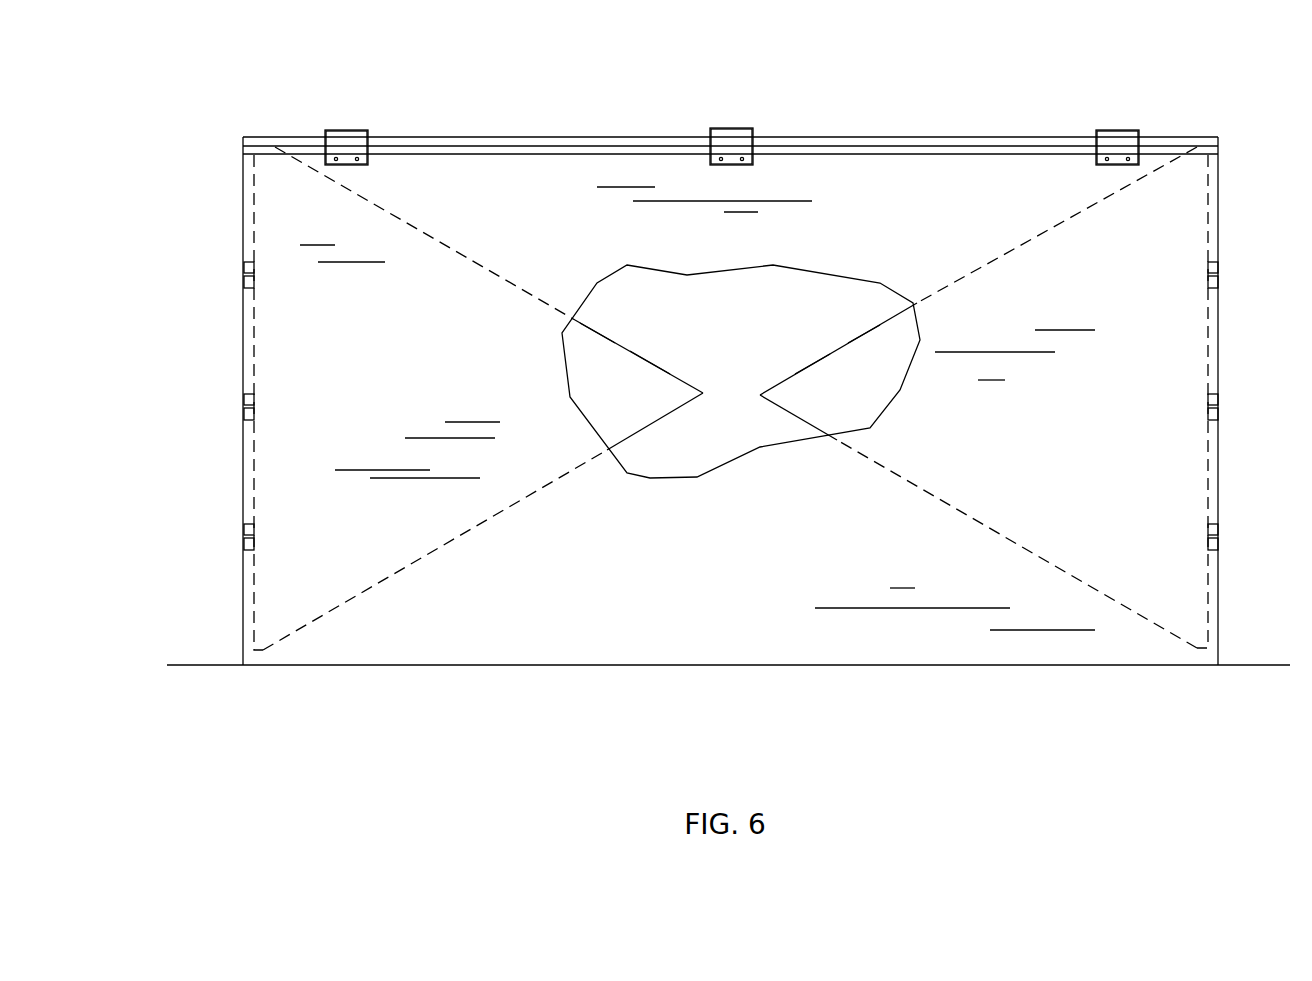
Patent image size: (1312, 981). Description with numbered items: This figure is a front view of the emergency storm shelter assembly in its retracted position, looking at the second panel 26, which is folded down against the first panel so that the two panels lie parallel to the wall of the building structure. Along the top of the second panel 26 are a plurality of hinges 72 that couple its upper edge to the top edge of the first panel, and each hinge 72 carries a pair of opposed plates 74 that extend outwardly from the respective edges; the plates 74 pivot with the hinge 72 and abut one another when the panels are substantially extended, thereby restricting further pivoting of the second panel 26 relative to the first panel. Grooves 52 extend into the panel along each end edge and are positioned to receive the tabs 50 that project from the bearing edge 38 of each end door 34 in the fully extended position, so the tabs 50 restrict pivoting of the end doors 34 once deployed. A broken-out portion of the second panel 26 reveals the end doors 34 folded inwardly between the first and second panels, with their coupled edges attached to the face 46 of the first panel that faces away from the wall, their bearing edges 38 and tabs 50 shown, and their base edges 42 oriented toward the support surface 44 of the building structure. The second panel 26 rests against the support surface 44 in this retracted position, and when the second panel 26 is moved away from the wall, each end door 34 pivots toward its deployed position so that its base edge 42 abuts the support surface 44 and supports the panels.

The second panel 26 is at (930, 178).
The end door 34 is at (660, 393).
The bearing edge 38 is at (650, 360).
The base edge 42 is at (793, 413).
The support surface 44 is at (208, 692).
The face 46 is at (712, 314).
The tab 50 is at (608, 332).
The groove 52 is at (240, 273).
The hinge 72 is at (372, 118).
The plate 74 is at (345, 130).